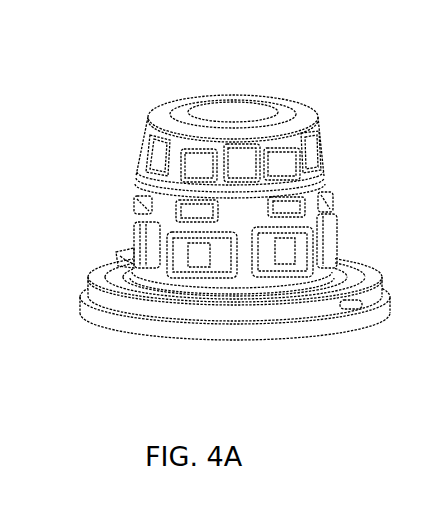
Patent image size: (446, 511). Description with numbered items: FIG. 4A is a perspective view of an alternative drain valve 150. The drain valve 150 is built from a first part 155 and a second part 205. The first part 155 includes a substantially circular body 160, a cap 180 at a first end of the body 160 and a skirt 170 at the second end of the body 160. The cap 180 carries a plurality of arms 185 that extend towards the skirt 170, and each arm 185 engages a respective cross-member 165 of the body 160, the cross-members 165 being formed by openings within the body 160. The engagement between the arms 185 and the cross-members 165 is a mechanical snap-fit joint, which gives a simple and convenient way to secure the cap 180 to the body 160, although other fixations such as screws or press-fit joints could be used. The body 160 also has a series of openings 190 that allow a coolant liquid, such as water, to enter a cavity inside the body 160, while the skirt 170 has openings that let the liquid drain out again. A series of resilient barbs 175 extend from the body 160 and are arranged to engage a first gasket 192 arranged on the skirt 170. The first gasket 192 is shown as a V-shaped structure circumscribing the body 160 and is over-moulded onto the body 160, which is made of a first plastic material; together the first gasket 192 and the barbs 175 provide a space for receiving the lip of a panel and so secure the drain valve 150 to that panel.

The drain valve 150 is at (131, 58).
The first part 155 is at (90, 150).
The body 160 is at (328, 175).
The cross-member 165 is at (323, 193).
The skirt 170 is at (315, 327).
The resilient barb 175 is at (137, 243).
The cap 180 is at (273, 100).
The arm 185 is at (290, 208).
The opening 190 is at (144, 266).
The first gasket 192 is at (133, 305).
The second part 205 is at (225, 257).